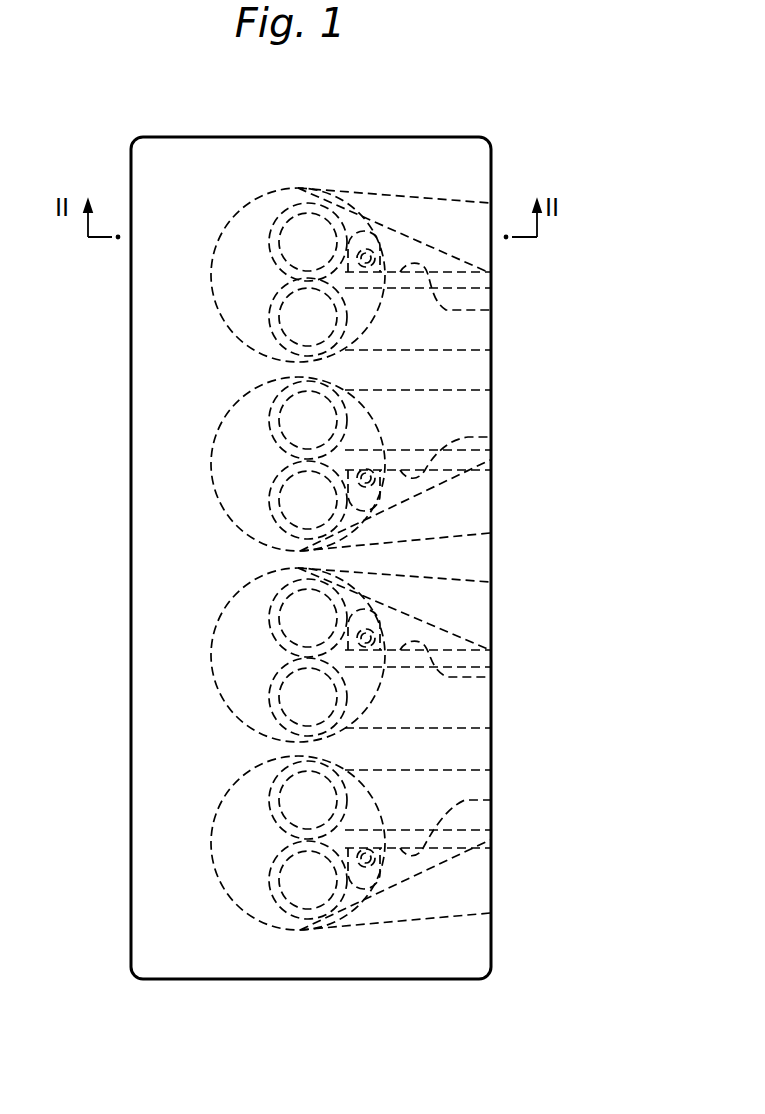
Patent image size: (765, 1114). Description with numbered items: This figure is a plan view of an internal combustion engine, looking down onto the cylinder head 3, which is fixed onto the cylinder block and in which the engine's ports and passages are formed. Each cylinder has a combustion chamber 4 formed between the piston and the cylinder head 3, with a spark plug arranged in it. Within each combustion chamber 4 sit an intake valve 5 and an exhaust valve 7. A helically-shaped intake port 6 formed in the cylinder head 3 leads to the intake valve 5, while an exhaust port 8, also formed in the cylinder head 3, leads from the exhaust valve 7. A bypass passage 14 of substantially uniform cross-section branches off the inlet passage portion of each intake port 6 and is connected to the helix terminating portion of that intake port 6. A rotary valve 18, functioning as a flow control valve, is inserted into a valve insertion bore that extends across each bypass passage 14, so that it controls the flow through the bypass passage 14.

The cylinder head 3 is at (174, 147).
The combustion chamber 4 is at (225, 312).
The intake valve 5 is at (286, 234).
The helically-shaped intake port 6 is at (420, 204).
The exhaust valve 7 is at (290, 330).
The exhaust port 8 is at (399, 350).
The bypass passage 14 is at (493, 309).
The rotary valve 18 is at (384, 252).